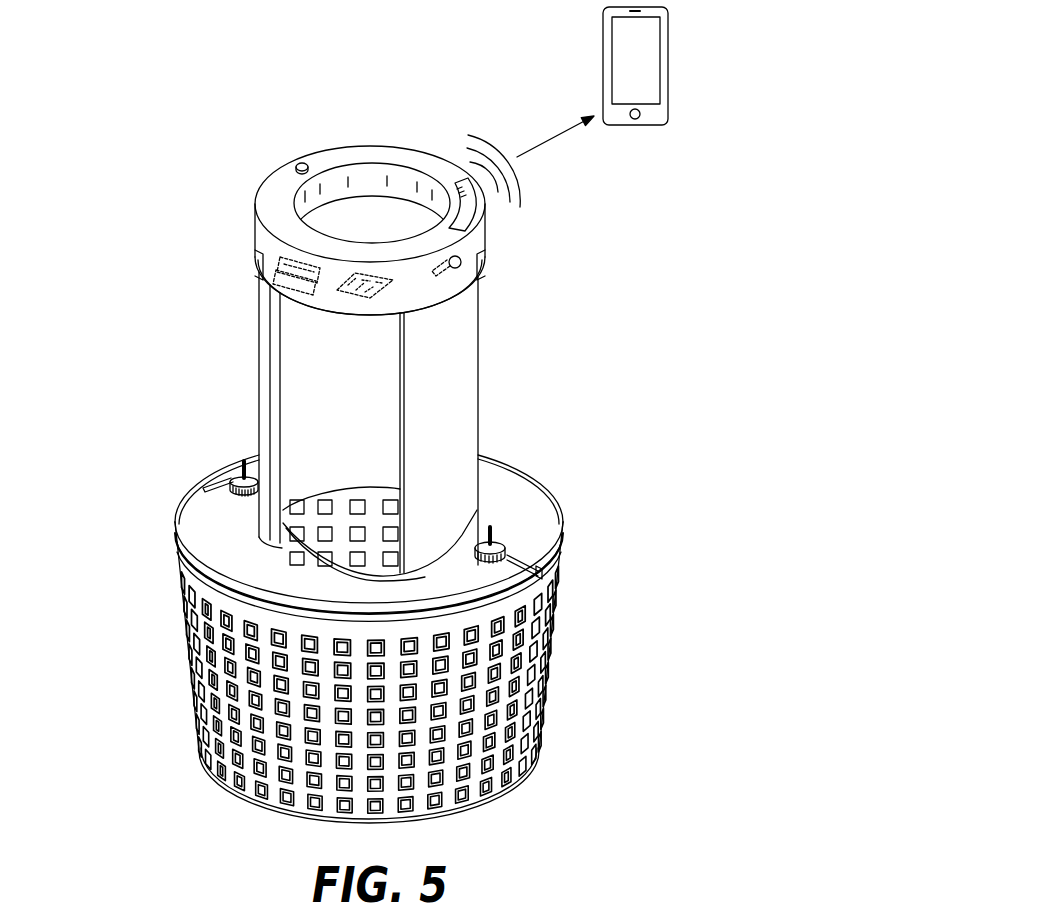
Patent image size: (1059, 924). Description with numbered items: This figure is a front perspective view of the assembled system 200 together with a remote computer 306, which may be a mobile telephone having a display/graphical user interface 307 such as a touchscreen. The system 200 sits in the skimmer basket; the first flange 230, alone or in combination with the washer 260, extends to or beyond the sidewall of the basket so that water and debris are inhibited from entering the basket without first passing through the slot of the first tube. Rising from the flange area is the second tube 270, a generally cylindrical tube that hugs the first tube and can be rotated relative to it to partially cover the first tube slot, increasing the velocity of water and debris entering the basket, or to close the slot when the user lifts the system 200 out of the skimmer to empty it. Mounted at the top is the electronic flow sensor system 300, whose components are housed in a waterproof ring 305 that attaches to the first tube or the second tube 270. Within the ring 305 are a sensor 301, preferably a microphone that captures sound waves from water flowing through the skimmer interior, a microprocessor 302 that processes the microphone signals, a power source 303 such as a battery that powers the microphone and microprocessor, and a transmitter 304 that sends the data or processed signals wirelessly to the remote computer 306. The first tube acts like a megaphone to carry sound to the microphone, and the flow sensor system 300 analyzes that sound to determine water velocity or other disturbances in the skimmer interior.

The system 200 is at (340, 454).
The first flange 230 is at (500, 492).
The washer 260 is at (538, 488).
The second tube 270 is at (448, 333).
The electronic flow sensor system 300 is at (393, 212).
The sensor 301 is at (462, 257).
The microprocessor 302 is at (383, 289).
The power source 303 is at (293, 290).
The transmitter 304 is at (480, 213).
The ring 305 is at (258, 232).
The remote computer 306 is at (641, 81).
The display/graphical user interface 307 is at (645, 40).